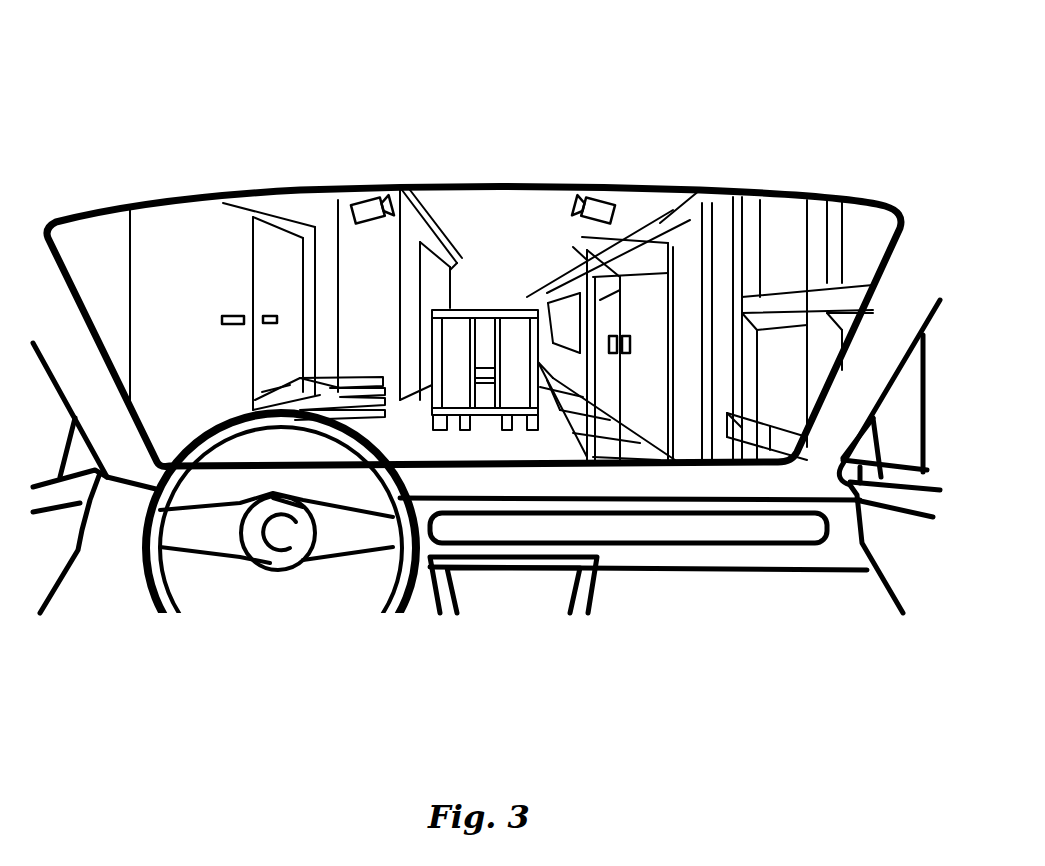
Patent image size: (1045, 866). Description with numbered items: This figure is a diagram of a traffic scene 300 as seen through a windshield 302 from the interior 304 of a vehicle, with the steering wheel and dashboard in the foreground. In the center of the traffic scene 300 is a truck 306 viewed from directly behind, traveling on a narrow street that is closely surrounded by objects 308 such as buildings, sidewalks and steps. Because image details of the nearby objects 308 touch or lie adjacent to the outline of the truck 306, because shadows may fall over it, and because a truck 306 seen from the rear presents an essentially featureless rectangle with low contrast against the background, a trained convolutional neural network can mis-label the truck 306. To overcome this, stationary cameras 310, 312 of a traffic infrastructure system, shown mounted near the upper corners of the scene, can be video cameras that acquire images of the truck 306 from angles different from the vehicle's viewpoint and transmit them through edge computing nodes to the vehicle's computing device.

The traffic scene 300 is at (496, 49).
The windshield 302 is at (201, 195).
The interior 304 is at (407, 627).
The truck 306 is at (484, 310).
The objects 308 is at (477, 228).
The camera 310 is at (610, 193).
The camera 312 is at (350, 192).